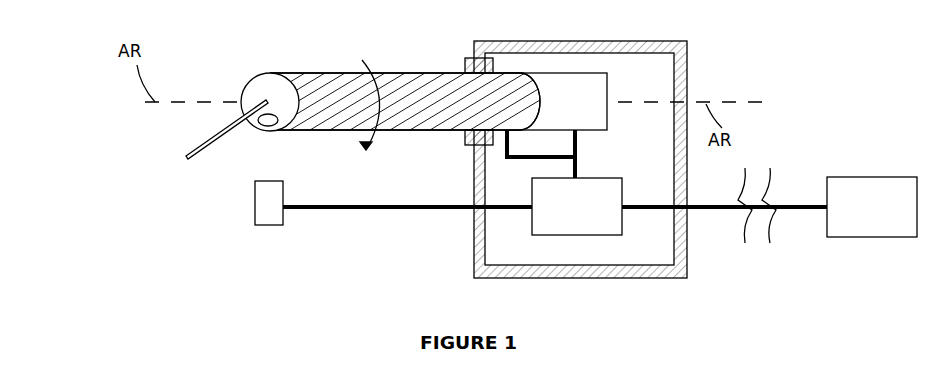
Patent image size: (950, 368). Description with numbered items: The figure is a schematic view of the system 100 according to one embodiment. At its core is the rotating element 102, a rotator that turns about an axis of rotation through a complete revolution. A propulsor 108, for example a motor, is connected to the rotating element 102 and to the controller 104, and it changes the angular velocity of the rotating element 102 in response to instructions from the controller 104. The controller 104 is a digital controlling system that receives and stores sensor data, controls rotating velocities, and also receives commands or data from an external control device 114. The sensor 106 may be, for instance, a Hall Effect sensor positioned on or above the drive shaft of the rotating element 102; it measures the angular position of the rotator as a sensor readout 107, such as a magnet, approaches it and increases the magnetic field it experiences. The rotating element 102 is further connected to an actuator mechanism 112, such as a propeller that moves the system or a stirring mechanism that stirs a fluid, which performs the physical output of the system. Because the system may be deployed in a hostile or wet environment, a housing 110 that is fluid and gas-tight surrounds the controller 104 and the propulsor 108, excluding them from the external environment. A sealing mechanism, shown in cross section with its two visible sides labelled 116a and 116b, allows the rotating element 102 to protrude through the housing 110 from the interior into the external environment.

The system 100 is at (80, 43).
The rotating element 102 is at (275, 73).
The controller 104 is at (555, 182).
The sensor 106 is at (268, 226).
The sensor readout 107 is at (284, 131).
The propulsor 108 is at (565, 73).
The housing 110 is at (678, 80).
The actuator mechanism 112 is at (190, 160).
The external control device 114 is at (872, 207).
The sealing mechanism side 116a is at (466, 60).
The sealing mechanism side 116b is at (466, 146).